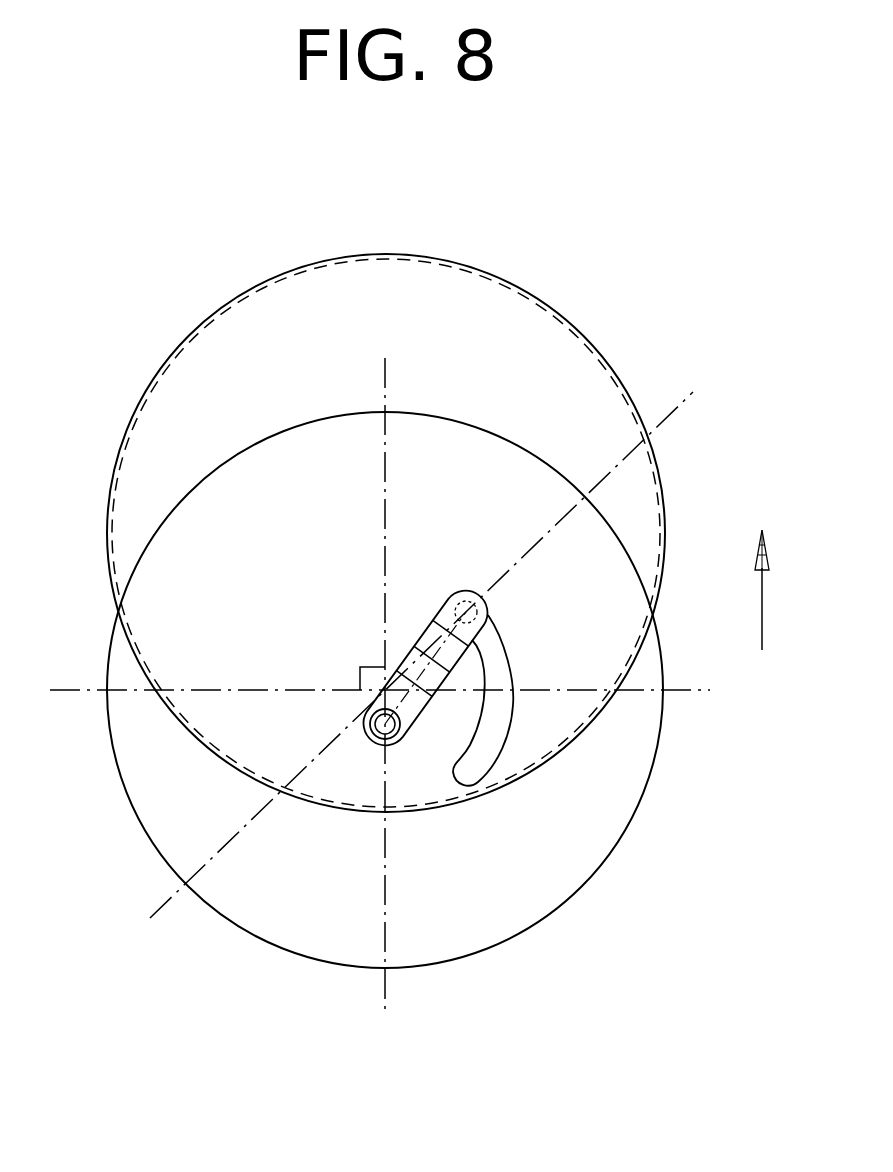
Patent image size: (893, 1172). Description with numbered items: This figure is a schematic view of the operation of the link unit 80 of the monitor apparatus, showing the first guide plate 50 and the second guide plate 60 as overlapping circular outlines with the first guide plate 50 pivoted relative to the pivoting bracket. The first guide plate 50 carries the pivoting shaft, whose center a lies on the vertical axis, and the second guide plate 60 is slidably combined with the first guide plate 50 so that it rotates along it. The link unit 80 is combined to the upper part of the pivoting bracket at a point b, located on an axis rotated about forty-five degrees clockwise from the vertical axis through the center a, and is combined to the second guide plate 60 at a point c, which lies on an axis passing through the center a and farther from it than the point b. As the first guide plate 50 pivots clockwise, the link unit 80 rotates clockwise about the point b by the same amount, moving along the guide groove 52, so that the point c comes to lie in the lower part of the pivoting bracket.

The first guide plate 50 is at (664, 777).
The second guide plate 60 is at (534, 294).
The link unit 80 is at (512, 736).
The guide groove 52 is at (451, 788).
The center of the pivoting shaft a is at (376, 692).
The point where the link unit is combined to the pivoting bracket b is at (479, 592).
The point where the link unit is combined to the second guide plate c is at (371, 731).